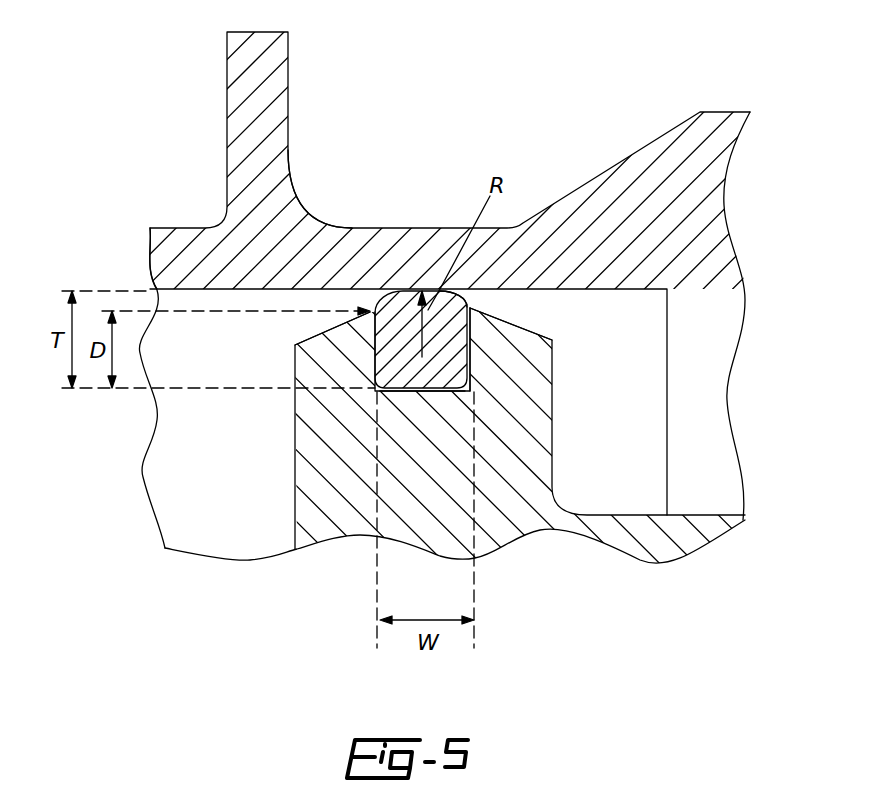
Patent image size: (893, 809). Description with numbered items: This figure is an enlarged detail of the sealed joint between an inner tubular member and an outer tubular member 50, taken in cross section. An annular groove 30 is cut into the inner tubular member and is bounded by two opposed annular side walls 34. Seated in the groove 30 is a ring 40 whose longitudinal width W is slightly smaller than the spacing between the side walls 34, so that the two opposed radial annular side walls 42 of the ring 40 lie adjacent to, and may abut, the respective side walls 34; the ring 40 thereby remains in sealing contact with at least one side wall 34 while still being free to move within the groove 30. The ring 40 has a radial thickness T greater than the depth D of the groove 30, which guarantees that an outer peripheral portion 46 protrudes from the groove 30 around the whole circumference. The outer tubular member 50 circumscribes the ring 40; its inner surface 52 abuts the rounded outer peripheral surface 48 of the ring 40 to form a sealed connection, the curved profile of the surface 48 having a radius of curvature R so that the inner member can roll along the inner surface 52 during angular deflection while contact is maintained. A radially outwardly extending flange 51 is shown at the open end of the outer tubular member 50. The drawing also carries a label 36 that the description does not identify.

The groove 30 is at (448, 384).
The annular side walls 34 is at (362, 312).
The groove body 36 is at (422, 391).
The ring 40 is at (488, 378).
The radial annular side walls 42 is at (382, 391).
The outer peripheral portion 46 is at (403, 292).
The outer peripheral surface 48 is at (449, 300).
The outer tubular member 50 is at (623, 177).
The radially outwardly extending flange 51 is at (732, 118).
The inner surface 52 is at (238, 289).